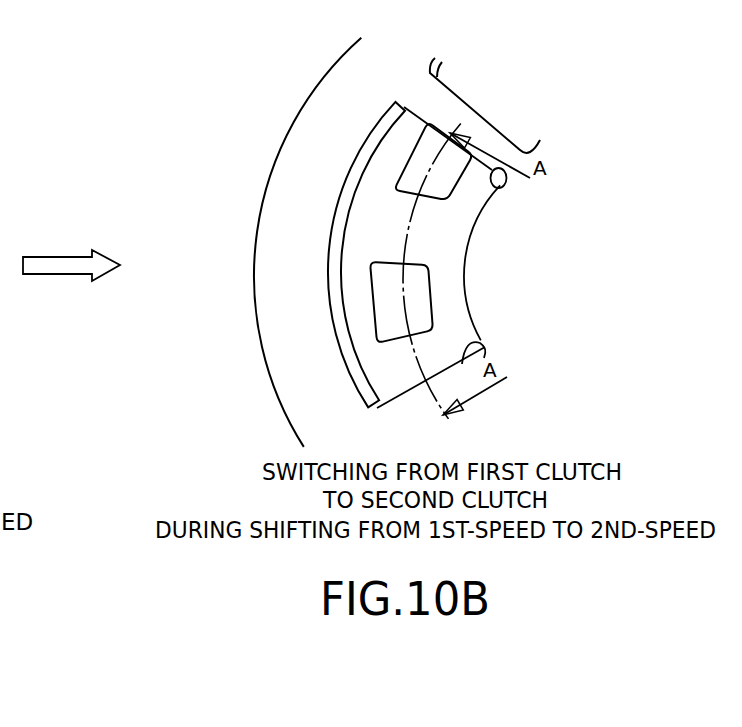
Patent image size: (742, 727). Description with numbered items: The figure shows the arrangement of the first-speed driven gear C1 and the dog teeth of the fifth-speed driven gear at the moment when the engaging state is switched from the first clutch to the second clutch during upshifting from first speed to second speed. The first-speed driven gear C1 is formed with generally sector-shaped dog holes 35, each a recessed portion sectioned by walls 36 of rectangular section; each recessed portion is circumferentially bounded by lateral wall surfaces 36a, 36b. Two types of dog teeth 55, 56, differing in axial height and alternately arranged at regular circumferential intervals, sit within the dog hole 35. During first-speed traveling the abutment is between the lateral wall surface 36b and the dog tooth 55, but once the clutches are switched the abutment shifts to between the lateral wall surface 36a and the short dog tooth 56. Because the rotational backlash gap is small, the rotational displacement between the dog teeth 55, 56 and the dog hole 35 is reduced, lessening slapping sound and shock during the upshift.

The first-speed driven gear C1 is at (327, 108).
The dog hole 35 is at (398, 244).
The wall 36 is at (470, 122).
The lateral wall surface 36a is at (504, 187).
The lateral wall surface 36b is at (487, 345).
The dog tooth 56 is at (447, 198).
The dog tooth 55 is at (423, 297).